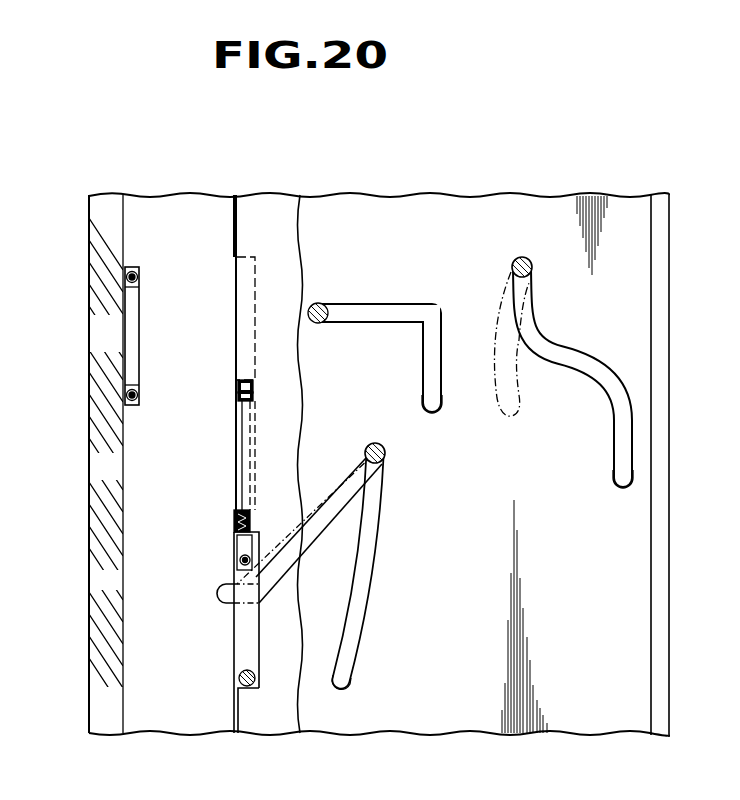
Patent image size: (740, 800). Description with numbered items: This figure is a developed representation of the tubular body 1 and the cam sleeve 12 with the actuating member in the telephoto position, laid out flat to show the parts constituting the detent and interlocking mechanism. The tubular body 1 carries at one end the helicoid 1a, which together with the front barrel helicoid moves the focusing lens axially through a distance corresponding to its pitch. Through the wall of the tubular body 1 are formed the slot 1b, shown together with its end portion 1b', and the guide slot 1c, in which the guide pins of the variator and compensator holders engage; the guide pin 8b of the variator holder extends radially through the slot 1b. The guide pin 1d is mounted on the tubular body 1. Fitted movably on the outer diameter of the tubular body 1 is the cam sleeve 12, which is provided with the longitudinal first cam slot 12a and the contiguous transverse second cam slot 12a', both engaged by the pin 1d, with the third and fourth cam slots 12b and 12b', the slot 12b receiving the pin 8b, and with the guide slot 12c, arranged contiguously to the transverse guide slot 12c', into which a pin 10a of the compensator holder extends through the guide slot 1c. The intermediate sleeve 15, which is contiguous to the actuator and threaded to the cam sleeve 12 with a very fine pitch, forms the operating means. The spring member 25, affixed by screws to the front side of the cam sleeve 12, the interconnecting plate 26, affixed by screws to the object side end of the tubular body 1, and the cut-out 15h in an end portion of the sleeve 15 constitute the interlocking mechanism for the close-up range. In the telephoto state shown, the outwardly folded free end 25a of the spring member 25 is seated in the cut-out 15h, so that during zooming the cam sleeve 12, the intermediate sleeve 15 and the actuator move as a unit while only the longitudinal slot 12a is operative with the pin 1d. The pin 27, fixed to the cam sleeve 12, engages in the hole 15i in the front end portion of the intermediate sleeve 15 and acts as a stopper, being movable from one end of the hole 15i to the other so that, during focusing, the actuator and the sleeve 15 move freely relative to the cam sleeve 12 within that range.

The tubular body 1 is at (168, 217).
The helicoid of the tubular body 1a is at (100, 268).
The slot of the tubular body 1b is at (309, 528).
The arm end loop 1b' is at (223, 591).
The guide slot of the tubular body 1c is at (500, 339).
The guide pin 1d is at (325, 307).
The guide pin 8b is at (381, 462).
The pivot pin 10a is at (520, 257).
The cam sleeve 12 is at (428, 220).
The first cam slot 12a is at (375, 358).
The second cam slot 12a' is at (439, 423).
The third cam slot 12b is at (377, 567).
The fourth cam slot 12b' is at (363, 668).
The guide slot 12c is at (572, 374).
The transverse guide slot 12c' is at (602, 472).
The intermediate sleeve 15 is at (247, 287).
The cut-out 15h is at (240, 384).
The hole 15i is at (260, 656).
The spring member 25 is at (243, 450).
The outwardly folded portion 25a is at (241, 396).
The interconnecting plate 26 is at (133, 319).
The pin 27 is at (239, 682).